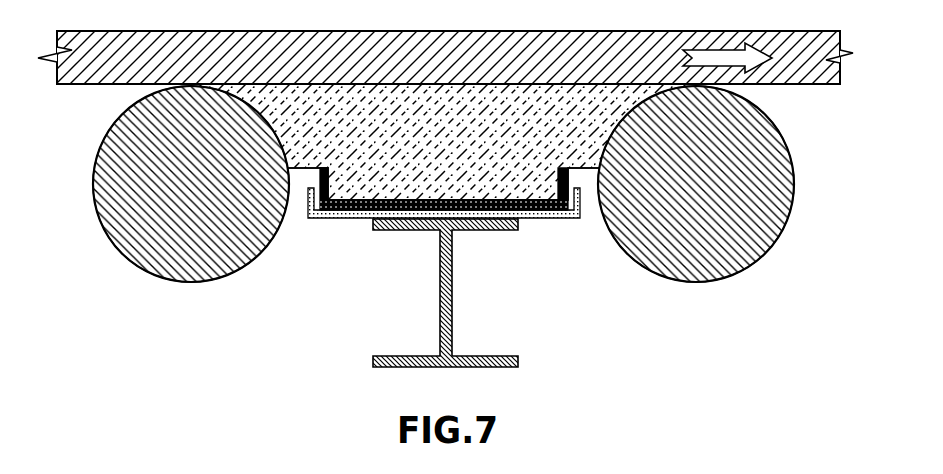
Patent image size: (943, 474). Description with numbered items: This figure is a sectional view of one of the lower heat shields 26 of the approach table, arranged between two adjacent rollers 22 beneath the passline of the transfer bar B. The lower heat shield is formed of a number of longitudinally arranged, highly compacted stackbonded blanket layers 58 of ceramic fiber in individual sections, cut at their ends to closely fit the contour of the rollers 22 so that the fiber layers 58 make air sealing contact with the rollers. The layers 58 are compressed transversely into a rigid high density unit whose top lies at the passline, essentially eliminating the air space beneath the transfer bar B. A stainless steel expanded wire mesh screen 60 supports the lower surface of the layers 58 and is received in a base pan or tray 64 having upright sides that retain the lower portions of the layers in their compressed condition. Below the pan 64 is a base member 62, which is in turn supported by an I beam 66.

The transfer bar B is at (250, 31).
The rollers 22 is at (112, 231).
The lower heat shield 26 is at (462, 267).
The stackbonded blanket layers 58 is at (533, 110).
The expanded wire mesh screen 60 is at (522, 219).
The base member 62 is at (581, 213).
The base pan or tray 64 is at (353, 219).
The I beam 66 is at (452, 292).